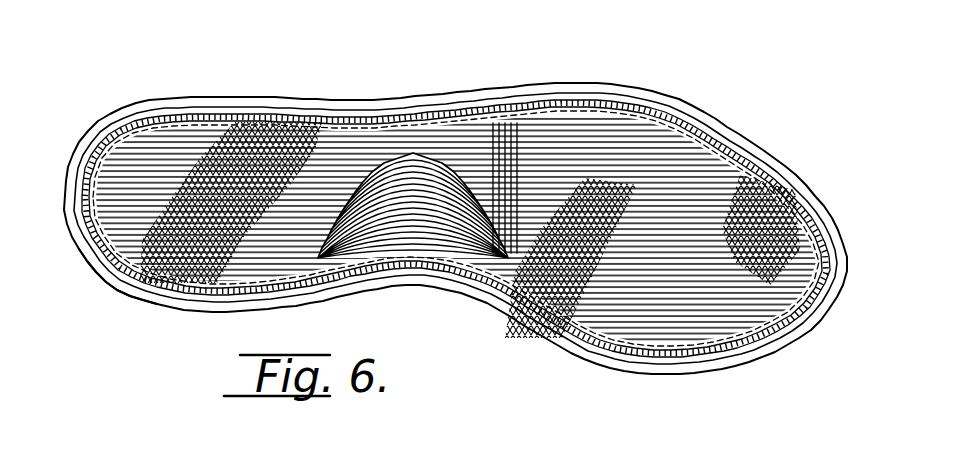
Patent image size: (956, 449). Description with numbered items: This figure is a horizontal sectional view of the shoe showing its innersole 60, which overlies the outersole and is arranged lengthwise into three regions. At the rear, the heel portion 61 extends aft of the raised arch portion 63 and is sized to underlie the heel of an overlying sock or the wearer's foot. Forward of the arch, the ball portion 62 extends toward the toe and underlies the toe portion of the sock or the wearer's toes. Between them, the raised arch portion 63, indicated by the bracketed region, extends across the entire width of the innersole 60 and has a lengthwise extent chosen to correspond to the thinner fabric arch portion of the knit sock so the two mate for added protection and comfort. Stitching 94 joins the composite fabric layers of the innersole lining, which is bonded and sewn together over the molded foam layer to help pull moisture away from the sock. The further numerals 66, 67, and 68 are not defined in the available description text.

The innersole 60 is at (189, 166).
The heel portion 61 is at (150, 172).
The ball portion 62 is at (653, 163).
The raised arch portion 63 is at (300, 95).
The heel portion 66 is at (110, 274).
The arch support dome 67 is at (413, 236).
The tread surface ribs 68 is at (340, 155).
The stitching 94 is at (747, 173).